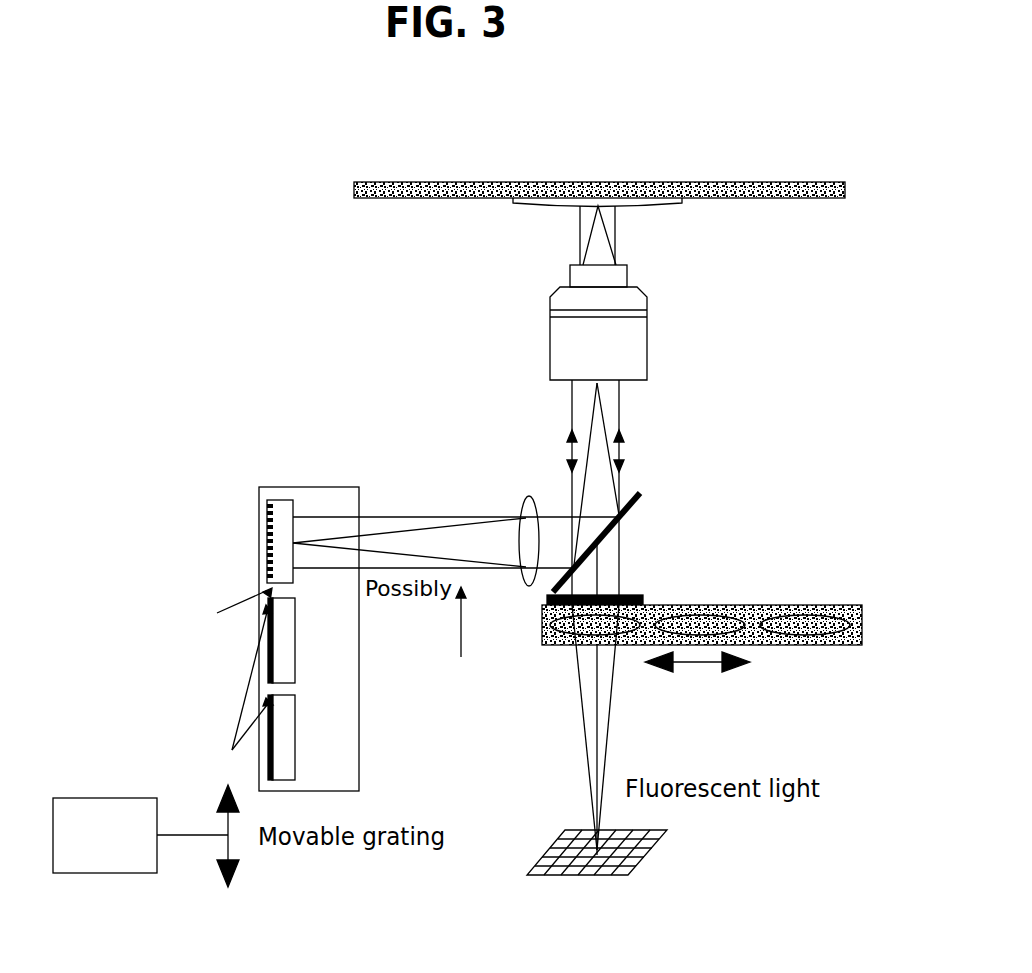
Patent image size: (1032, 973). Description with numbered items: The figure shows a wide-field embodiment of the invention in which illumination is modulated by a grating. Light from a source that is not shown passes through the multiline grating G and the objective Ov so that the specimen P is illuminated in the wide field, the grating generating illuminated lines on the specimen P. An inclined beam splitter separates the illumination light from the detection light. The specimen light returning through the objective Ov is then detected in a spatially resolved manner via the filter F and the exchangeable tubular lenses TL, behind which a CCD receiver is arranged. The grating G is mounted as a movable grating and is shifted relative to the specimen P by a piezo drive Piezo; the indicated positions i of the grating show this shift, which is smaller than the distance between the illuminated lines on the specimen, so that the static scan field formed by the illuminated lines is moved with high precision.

The specimen P is at (613, 190).
The objective Ov is at (623, 293).
The multiline grating G is at (289, 639).
The filter F is at (613, 584).
The exchangeable tubular lenses TL is at (702, 641).
The grating position index / illumination arrows i is at (200, 671).
The piezo drive Piezo is at (146, 836).